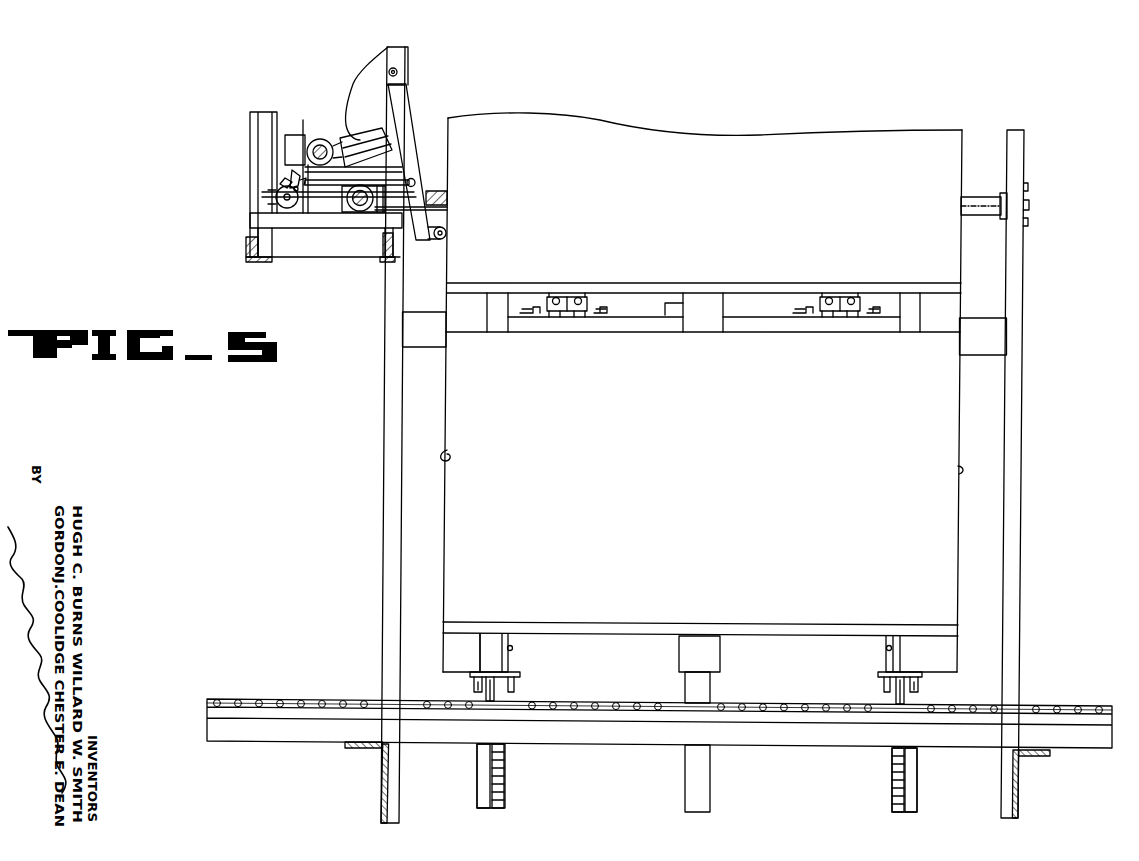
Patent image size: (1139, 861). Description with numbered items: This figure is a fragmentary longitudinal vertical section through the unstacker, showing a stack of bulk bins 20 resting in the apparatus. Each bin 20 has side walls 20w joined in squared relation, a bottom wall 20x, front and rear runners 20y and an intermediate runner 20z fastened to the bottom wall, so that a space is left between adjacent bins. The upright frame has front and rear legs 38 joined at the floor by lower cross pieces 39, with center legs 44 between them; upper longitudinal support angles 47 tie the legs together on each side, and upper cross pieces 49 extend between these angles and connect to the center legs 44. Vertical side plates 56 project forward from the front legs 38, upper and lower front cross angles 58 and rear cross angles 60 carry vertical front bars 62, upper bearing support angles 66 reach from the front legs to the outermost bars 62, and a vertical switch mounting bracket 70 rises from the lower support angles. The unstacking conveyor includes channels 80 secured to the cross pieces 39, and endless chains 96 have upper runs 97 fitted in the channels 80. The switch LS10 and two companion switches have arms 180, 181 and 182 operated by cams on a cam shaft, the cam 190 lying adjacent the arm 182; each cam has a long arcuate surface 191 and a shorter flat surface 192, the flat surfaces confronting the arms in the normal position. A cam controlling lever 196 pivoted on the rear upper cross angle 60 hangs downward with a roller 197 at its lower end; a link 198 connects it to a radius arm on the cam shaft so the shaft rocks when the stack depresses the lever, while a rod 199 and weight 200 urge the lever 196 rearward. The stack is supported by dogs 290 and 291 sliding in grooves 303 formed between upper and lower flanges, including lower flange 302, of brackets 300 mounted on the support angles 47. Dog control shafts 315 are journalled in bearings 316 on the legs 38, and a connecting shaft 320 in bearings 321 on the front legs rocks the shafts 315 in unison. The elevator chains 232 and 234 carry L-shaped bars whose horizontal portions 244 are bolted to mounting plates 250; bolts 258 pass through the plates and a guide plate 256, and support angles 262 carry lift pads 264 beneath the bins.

The bin 20 is at (937, 130).
The side walls 20w is at (452, 456).
The bottom wall 20x is at (775, 632).
The front and rear runners 20y is at (465, 650).
The intermediate runner 20z is at (702, 640).
The front and rear legs 38 is at (1024, 131).
The front and rear lower cross pieces 39 is at (382, 794).
The center legs 44 is at (708, 682).
The upper longitudinal support angles 47 is at (420, 332).
The upper cross pieces 49 is at (670, 305).
The vertical side plates 56 is at (322, 259).
The upper and lower front cross angles 58 is at (252, 261).
The upper and lower rear cross angles 60 is at (394, 262).
The vertical front bars 62 is at (258, 116).
The upper horizontal bearing support angles 66 is at (262, 221).
The vertical switch mounting bracket 70 is at (296, 135).
The channels 80 is at (588, 712).
The endless chains 96 is at (227, 699).
The upper runs 97 is at (300, 699).
The switch arm 180 is at (292, 175).
The switch arm 181 is at (286, 182).
The switch arm 182 is at (294, 188).
The cam 190 is at (288, 208).
The arcuate surfaces 191 is at (350, 205).
The flat surfaces 192 is at (283, 197).
The cam controlling lever 196 is at (405, 112).
The roller 197 is at (446, 237).
The link 198 is at (320, 178).
The rod 199 is at (347, 135).
The weight 200 is at (336, 145).
The endless chain 232 is at (892, 796).
The endless chain 234 is at (505, 791).
The horizontal portions 244 is at (500, 703).
The L-shaped mounting plates 250 is at (508, 662).
The guide plate 256 is at (480, 687).
The bolts 258 is at (514, 648).
The support angles 262 is at (882, 690).
The lift pads 264 is at (486, 699).
The stack supporting dog 290 is at (841, 296).
The stack supporting dog 291 is at (567, 296).
The front and rear brackets 300 is at (550, 297).
The lower flange 302 is at (552, 317).
The grooves 303 is at (574, 318).
The dog control shafts 315 is at (975, 207).
The bearings 316 is at (1001, 197).
The connecting shaft 320 is at (447, 194).
The bearings 321 is at (447, 210).
The switch LS10 is at (287, 135).